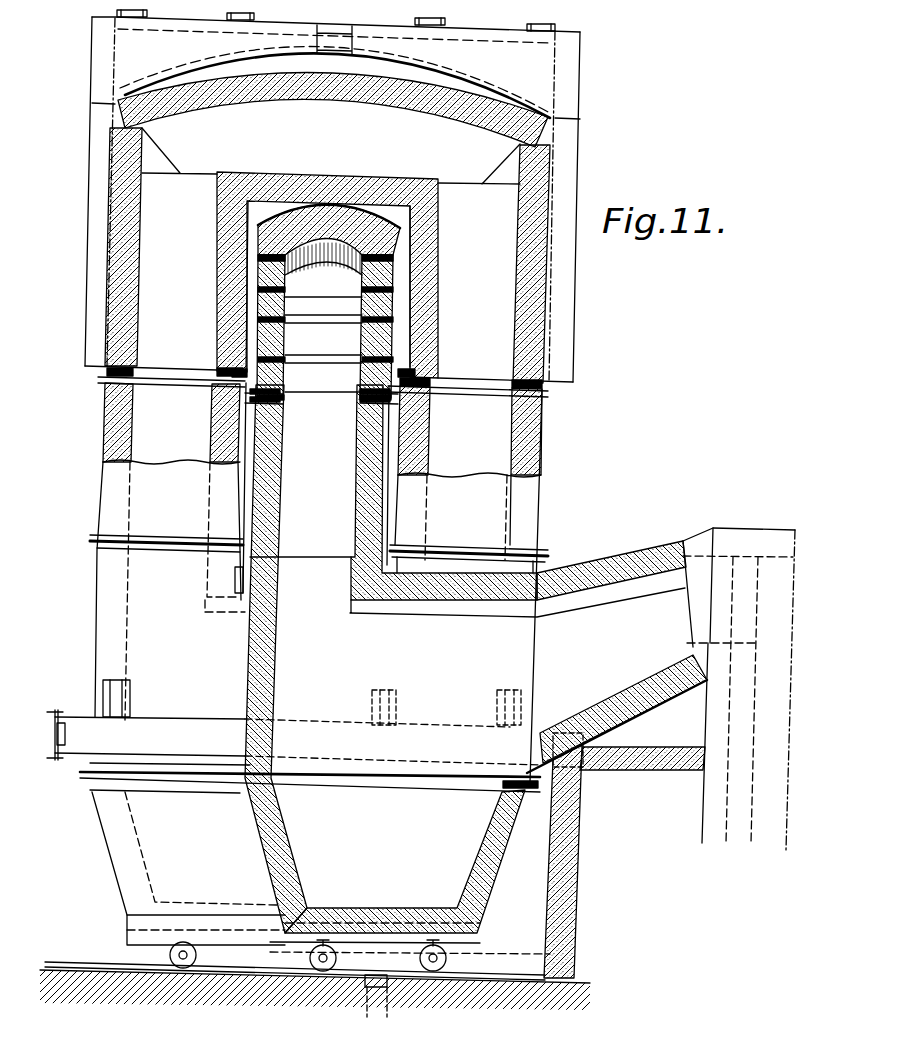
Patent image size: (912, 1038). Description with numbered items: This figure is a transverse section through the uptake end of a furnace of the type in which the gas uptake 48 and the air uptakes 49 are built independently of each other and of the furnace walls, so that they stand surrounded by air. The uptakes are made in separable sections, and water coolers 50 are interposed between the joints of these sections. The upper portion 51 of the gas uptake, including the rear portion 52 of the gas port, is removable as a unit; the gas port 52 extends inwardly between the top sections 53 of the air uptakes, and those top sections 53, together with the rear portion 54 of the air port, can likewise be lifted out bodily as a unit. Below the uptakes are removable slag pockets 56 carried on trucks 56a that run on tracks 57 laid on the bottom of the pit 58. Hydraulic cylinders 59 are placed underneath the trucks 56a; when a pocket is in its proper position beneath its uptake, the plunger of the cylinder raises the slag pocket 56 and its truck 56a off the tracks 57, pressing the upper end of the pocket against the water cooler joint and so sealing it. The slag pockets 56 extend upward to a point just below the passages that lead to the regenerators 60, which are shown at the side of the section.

The gas uptake 48 is at (469, 659).
The air uptakes 49 is at (294, 582).
The water coolers 50 is at (362, 371).
The upper portion of the gas uptake 51 is at (325, 327).
The rear portion of the gas port 52 is at (329, 251).
The top sections of the air uptakes 53 is at (327, 255).
The rear portion of the air port 54 is at (332, 196).
The removable slag pockets 56 is at (321, 872).
The trucks 56a is at (446, 962).
The tracks 57 is at (233, 971).
The pit 58 is at (545, 861).
The hydraulic cylinders 59 is at (367, 992).
The regenerators 60 is at (748, 533).